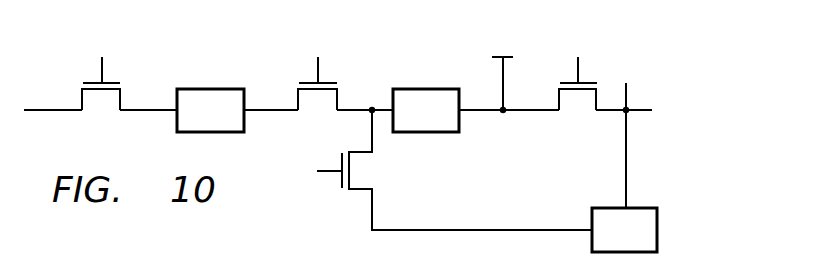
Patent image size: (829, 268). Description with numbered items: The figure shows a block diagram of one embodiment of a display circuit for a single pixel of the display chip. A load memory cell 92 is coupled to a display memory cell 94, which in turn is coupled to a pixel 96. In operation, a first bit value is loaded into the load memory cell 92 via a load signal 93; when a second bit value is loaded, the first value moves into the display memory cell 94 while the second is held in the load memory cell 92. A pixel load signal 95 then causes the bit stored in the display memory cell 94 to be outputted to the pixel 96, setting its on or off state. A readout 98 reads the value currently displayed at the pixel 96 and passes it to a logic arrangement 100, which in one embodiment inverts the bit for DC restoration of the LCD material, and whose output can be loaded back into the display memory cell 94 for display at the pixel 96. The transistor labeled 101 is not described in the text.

The load memory cell 92 is at (210, 89).
The load signal 93 is at (93, 83).
The display memory cell 94 is at (428, 89).
The load signal 95 is at (313, 83).
The pixel 96 is at (511, 57).
The readout 98 is at (587, 83).
The logic arrangement 100 is at (657, 230).
The transistor 101 is at (340, 178).